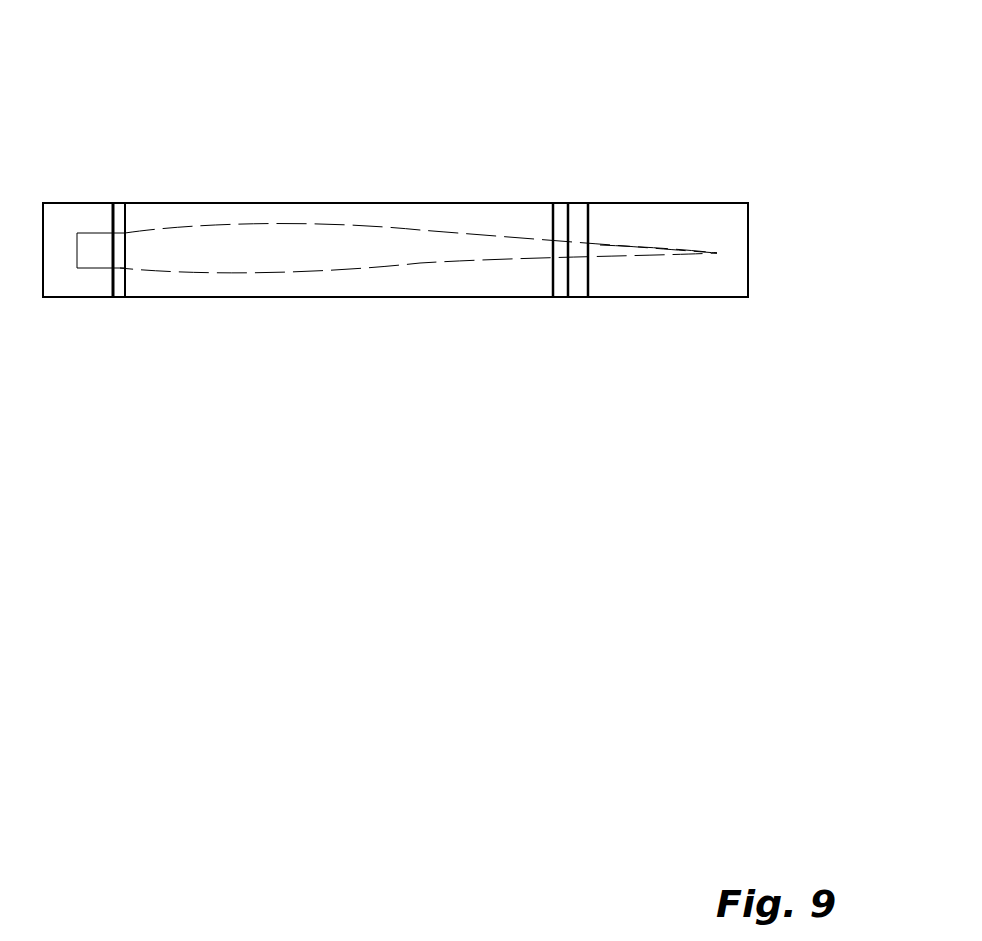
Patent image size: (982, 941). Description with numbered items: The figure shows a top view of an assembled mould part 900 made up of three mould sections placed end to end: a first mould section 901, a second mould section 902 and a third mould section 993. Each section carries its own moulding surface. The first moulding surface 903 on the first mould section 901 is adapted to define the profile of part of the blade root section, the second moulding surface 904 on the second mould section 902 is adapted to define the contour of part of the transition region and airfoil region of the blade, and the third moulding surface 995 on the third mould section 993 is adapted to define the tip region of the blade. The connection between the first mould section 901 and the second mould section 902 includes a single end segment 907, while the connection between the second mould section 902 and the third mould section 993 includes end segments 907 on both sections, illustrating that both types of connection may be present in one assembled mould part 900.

The mould part 900 is at (738, 91).
The first mould section 901 is at (72, 212).
The end segment 907 is at (113, 212).
The second mould section 902 is at (178, 212).
The first moulding surface 903 is at (95, 253).
The second moulding surface 904 is at (290, 253).
The third mould section 993 is at (645, 222).
The third moulding surface 995 is at (612, 252).